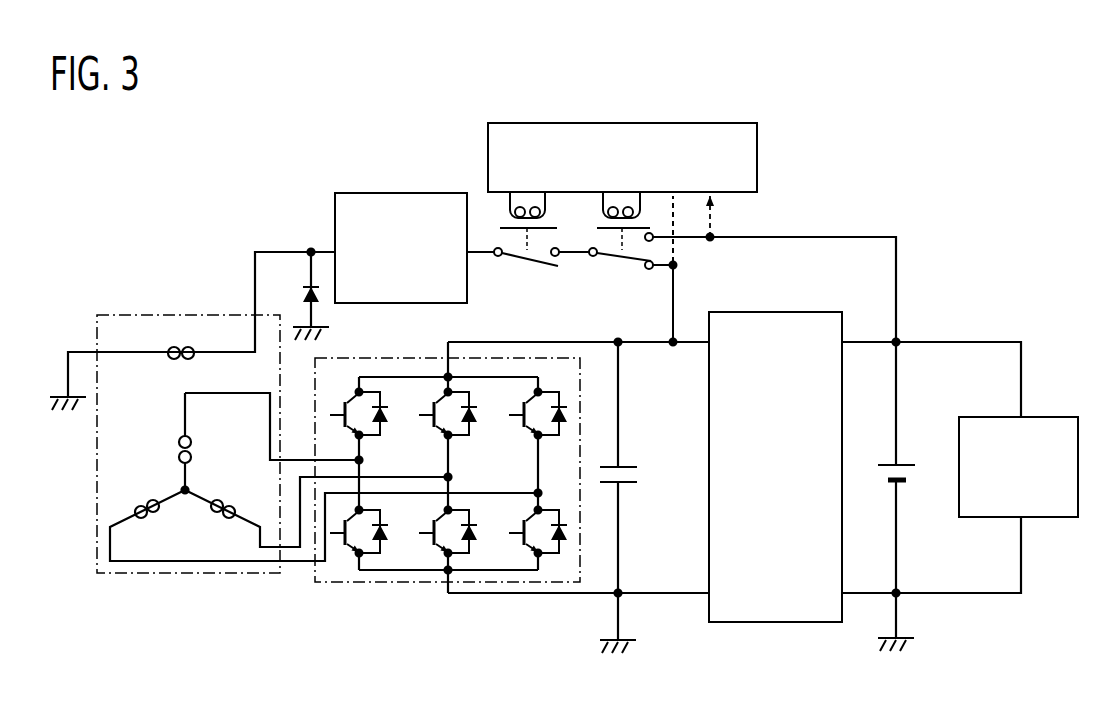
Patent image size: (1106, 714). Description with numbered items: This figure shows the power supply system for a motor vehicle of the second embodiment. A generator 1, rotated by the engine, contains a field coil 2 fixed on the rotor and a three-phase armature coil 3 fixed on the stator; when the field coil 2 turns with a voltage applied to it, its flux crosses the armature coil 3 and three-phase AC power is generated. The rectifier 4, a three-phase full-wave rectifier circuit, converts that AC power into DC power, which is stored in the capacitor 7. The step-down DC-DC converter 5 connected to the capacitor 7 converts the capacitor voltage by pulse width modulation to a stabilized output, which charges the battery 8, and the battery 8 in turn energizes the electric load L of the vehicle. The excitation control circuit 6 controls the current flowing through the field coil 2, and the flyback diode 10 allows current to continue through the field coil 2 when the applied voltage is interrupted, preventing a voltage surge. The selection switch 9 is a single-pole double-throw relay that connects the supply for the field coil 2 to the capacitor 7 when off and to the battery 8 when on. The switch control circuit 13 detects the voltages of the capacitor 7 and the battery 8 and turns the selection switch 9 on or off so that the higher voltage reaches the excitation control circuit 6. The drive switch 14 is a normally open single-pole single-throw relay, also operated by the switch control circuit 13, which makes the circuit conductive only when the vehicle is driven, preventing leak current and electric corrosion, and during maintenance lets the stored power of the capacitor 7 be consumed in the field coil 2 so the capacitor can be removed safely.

The generator 1 is at (130, 575).
The field coil 2 is at (176, 335).
The three-phase armature coil 3 is at (213, 530).
The rectifier 4 is at (388, 587).
The DC-DC converter 5 is at (755, 623).
The excitation control circuit 6 is at (383, 193).
The capacitor 7 is at (643, 482).
The battery 8 is at (923, 480).
The selection switch 9 is at (598, 262).
The flyback diode 10 is at (296, 292).
The switch control circuit 13 is at (762, 154).
The drive switch 14 is at (526, 262).
The electric load L is at (1050, 518).